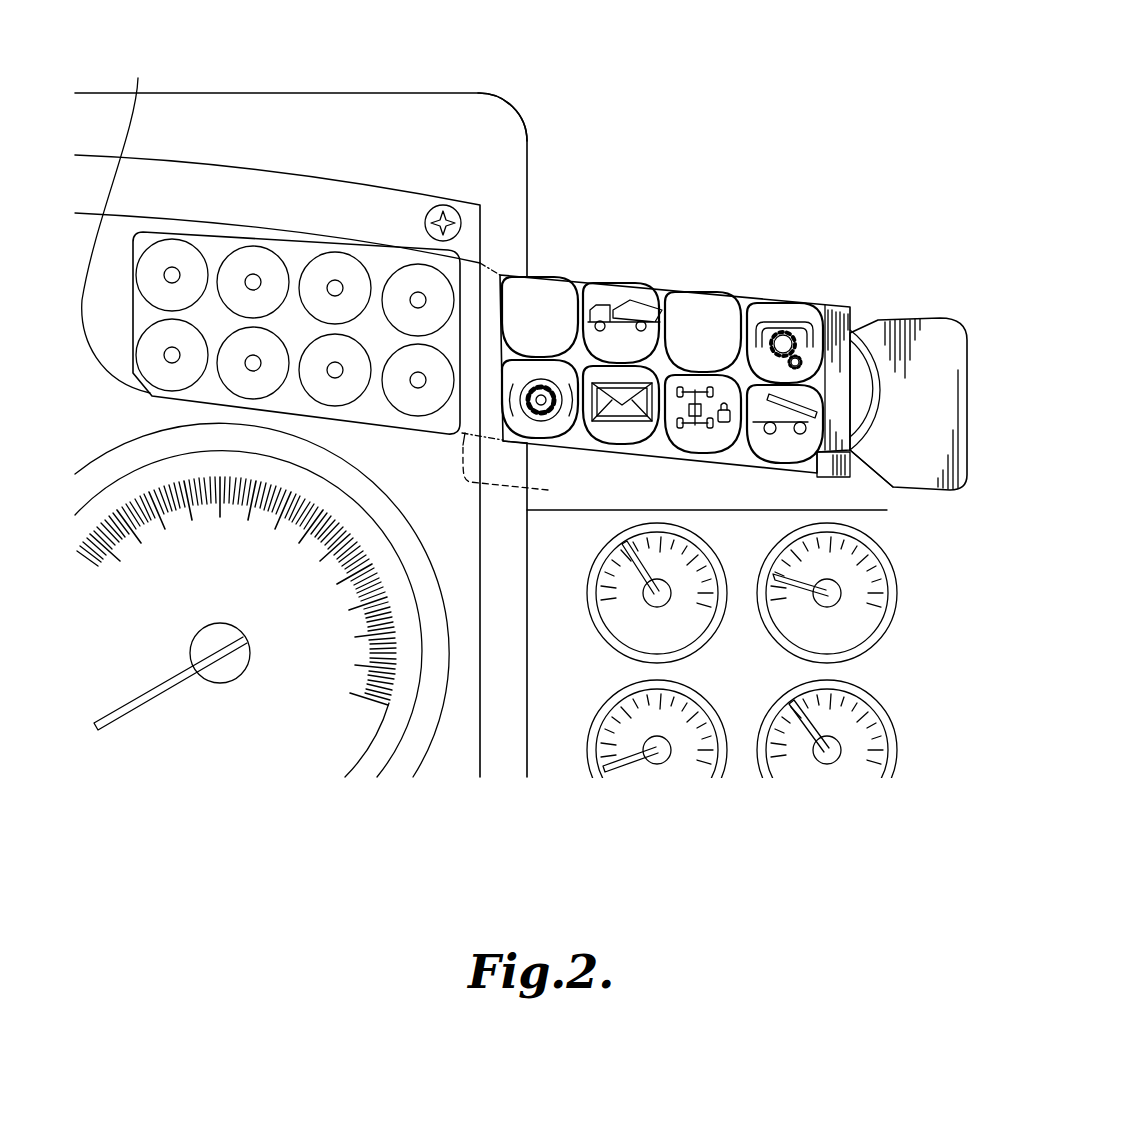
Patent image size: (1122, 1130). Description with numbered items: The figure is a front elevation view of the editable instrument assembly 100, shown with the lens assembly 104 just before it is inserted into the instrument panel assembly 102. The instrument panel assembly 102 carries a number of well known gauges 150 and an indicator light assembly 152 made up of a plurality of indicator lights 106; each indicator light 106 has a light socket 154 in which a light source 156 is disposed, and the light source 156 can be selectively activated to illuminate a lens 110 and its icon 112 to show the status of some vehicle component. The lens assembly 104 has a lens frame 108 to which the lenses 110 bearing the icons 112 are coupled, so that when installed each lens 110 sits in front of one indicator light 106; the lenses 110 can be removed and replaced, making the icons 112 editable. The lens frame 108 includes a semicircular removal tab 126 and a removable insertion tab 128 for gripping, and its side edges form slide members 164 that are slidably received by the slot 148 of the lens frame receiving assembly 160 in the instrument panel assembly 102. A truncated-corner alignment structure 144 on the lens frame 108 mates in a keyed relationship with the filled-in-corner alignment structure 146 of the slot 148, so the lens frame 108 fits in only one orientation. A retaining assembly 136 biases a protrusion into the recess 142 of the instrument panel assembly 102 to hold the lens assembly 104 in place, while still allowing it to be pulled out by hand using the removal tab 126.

The editable instrument assembly 100 is at (708, 83).
The instrument panel assembly 102 is at (266, 218).
The lens assembly 104 is at (675, 339).
The indicator lights 106 is at (329, 236).
The lens frame 108 is at (775, 297).
The lenses 110 is at (558, 280).
The icons 112 is at (697, 440).
The removal tab 126 is at (866, 362).
The insertion tab 128 is at (938, 338).
The retaining assembly 136 is at (858, 469).
The recess 142 is at (530, 476).
The alignment structure 144 is at (513, 442).
The alignment structure 146 is at (125, 222).
The slot 148 is at (212, 237).
The gauges 150 is at (882, 703).
The indicator light assembly 152 is at (398, 258).
The light socket 154 is at (383, 269).
The light source 156 is at (480, 265).
The lens frame receiving assembly 160 is at (397, 425).
The slide members 164 is at (700, 280).